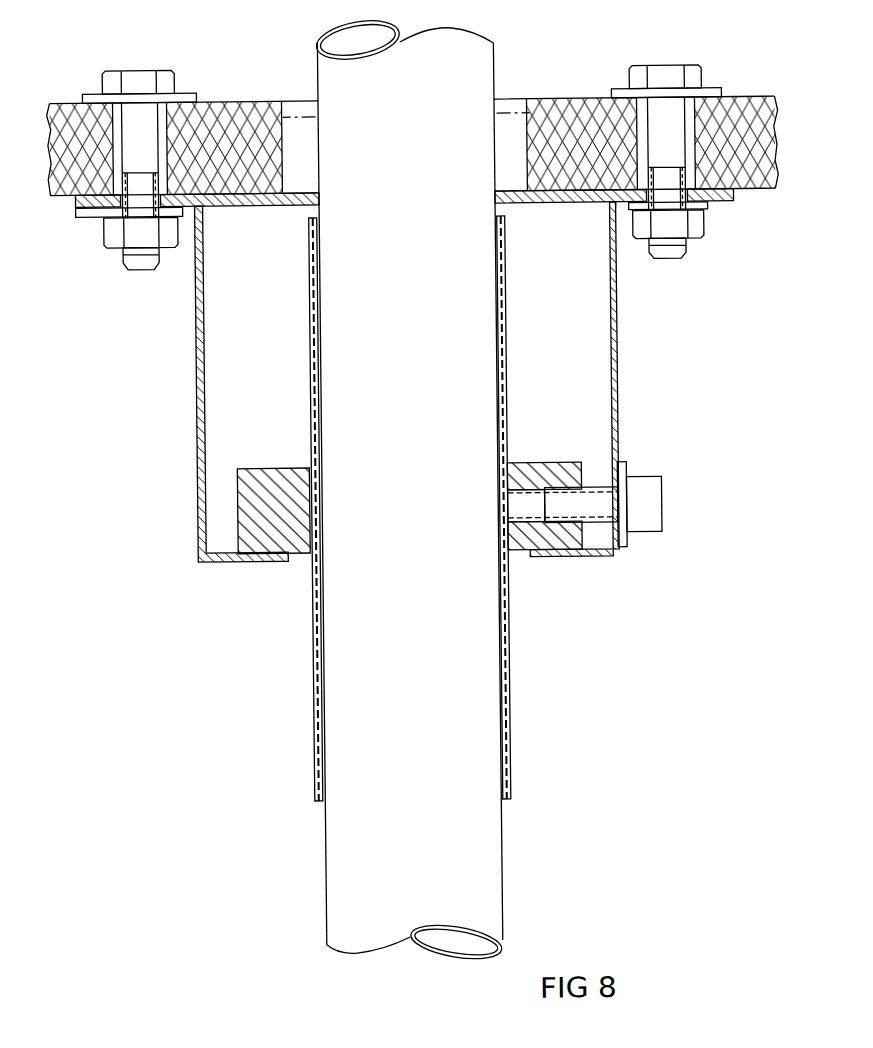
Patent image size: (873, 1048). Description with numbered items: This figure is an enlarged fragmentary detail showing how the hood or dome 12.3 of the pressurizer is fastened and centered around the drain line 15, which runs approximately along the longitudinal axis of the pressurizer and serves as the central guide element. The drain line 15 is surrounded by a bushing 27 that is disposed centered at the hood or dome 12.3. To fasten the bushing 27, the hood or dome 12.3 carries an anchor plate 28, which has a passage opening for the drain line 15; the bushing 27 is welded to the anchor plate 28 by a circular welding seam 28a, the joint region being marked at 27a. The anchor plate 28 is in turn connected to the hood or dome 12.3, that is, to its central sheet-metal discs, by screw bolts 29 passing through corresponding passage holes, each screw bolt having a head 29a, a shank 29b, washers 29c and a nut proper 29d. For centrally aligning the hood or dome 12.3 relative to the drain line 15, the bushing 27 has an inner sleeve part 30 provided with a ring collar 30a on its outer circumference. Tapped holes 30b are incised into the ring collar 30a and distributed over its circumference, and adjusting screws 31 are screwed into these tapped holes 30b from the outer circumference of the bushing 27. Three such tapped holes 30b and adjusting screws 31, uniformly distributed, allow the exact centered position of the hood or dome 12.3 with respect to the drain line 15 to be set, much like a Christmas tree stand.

The drain line 15 is at (483, 865).
The hood or dome 12.3 is at (249, 99).
The anchor plate 28 is at (259, 205).
The circular welding seam 28a is at (500, 206).
The bushing 27 is at (615, 374).
The bracket joint 27a is at (616, 206).
The screw bolts 29 is at (406, 163).
The head 29a is at (142, 80).
The shank 29b is at (145, 262).
The washers 29c is at (187, 94).
The nut proper 29d is at (113, 240).
The inner sleeve part 30 is at (504, 333).
The ring collar 30a is at (262, 467).
The tapped holes 30b is at (526, 505).
The adjusting screws 31 is at (650, 500).